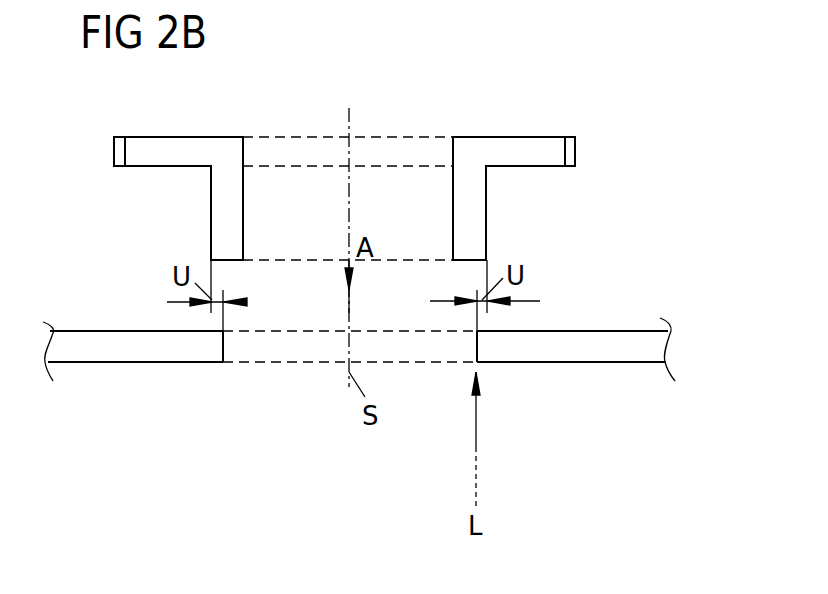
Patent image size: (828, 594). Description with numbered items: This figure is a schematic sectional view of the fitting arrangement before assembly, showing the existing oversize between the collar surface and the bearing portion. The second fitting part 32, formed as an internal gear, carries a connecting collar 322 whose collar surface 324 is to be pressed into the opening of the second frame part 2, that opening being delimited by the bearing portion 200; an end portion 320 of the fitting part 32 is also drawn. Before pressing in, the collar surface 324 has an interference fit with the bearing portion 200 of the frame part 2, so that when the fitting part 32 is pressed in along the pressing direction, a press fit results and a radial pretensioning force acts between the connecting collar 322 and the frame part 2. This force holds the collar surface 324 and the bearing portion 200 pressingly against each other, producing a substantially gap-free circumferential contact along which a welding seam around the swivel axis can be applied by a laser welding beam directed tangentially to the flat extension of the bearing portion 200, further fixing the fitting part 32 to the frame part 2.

The second frame part 2 is at (641, 330).
The bearing portion 200 is at (223, 345).
The second fitting part 32 is at (505, 136).
The end portion of holding element 320 is at (576, 150).
The connecting collar 322 is at (476, 224).
The collar surface 324 is at (210, 207).